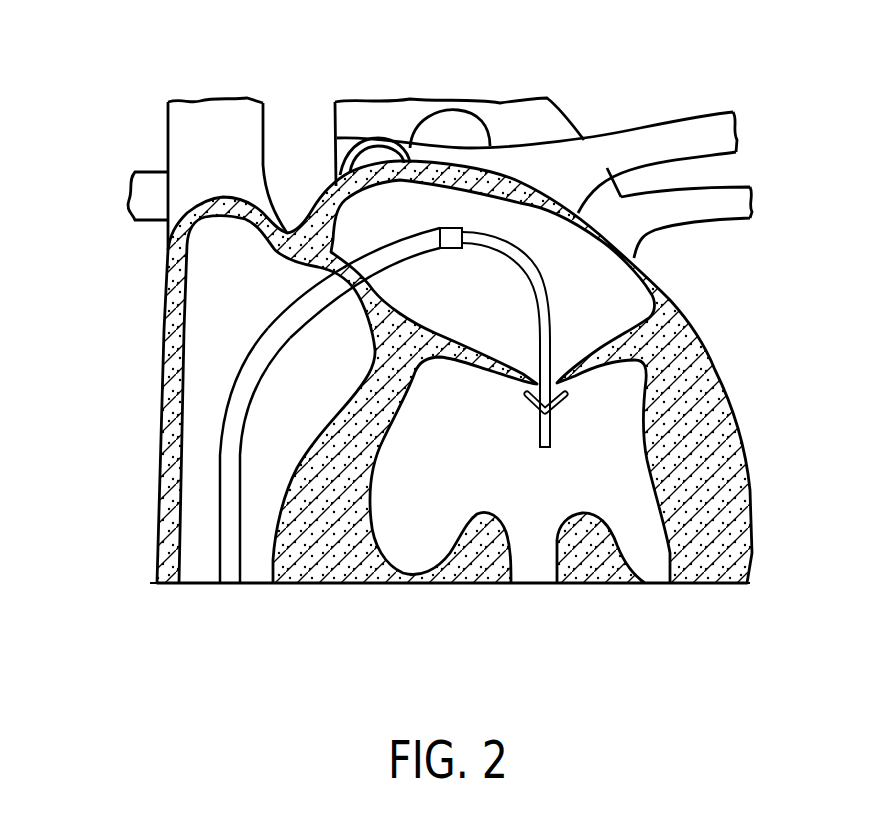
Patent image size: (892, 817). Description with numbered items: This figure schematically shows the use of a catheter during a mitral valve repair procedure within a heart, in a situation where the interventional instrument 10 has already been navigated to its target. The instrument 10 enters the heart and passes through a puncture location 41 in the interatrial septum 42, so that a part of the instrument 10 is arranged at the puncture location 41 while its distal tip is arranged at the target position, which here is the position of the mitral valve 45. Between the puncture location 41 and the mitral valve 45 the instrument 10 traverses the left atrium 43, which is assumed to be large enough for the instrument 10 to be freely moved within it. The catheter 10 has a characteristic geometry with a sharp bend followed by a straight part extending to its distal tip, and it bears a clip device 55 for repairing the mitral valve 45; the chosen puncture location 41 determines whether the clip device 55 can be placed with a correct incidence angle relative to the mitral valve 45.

The interventional instrument 10 is at (230, 443).
The puncture location 41 is at (316, 271).
The interatrial septum 42 is at (393, 320).
The left atrium 43 is at (565, 258).
The mitral valve 45 is at (510, 383).
The clip device 55 is at (564, 426).